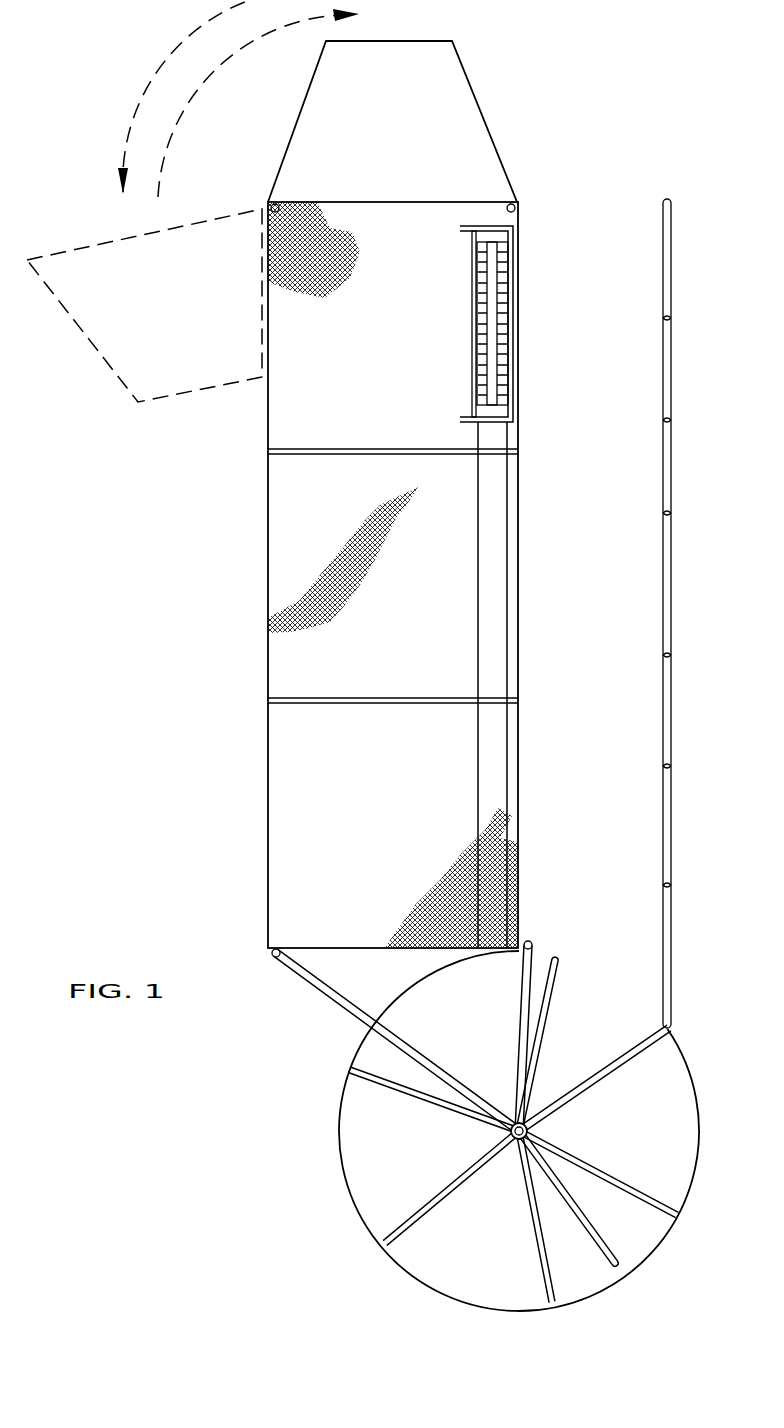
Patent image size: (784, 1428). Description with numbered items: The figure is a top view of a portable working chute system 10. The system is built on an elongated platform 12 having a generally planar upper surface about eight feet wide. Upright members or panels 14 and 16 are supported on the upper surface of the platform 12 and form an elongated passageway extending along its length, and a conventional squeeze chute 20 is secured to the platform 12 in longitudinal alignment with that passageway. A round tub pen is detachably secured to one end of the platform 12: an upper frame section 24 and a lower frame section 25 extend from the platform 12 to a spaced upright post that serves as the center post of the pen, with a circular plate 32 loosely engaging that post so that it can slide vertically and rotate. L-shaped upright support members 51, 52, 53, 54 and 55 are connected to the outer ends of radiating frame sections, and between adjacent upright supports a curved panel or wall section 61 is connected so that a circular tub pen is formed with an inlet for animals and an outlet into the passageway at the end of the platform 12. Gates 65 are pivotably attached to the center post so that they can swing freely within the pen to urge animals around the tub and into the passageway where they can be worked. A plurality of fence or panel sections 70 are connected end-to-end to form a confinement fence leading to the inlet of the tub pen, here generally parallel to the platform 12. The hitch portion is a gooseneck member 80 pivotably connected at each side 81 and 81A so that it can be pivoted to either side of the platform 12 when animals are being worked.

The portable working chute system 10 is at (250, 779).
The elongated platform 12 is at (303, 597).
The upright member or panel 14 is at (480, 877).
The upright member or panel 16 is at (508, 803).
The squeeze chute 20 is at (518, 312).
The upper frame section 24 is at (313, 987).
The frame section 25 is at (521, 1003).
The circular plate 32 is at (532, 1131).
The L-shaped upright support member 51 is at (405, 1095).
The L-shaped upright support member 52 is at (428, 1201).
The L-shaped upright support member 53 is at (541, 1258).
The L-shaped upright support member 54 is at (642, 1189).
The L-shaped upright support member 55 is at (621, 1056).
The curved panel or wall section 61 is at (397, 997).
The gate 65 is at (557, 990).
The fence or panel section 70 is at (668, 274).
The gooseneck member 80 is at (475, 97).
The side pivot connection 81 is at (268, 202).
The side pivot connection 81A is at (516, 201).